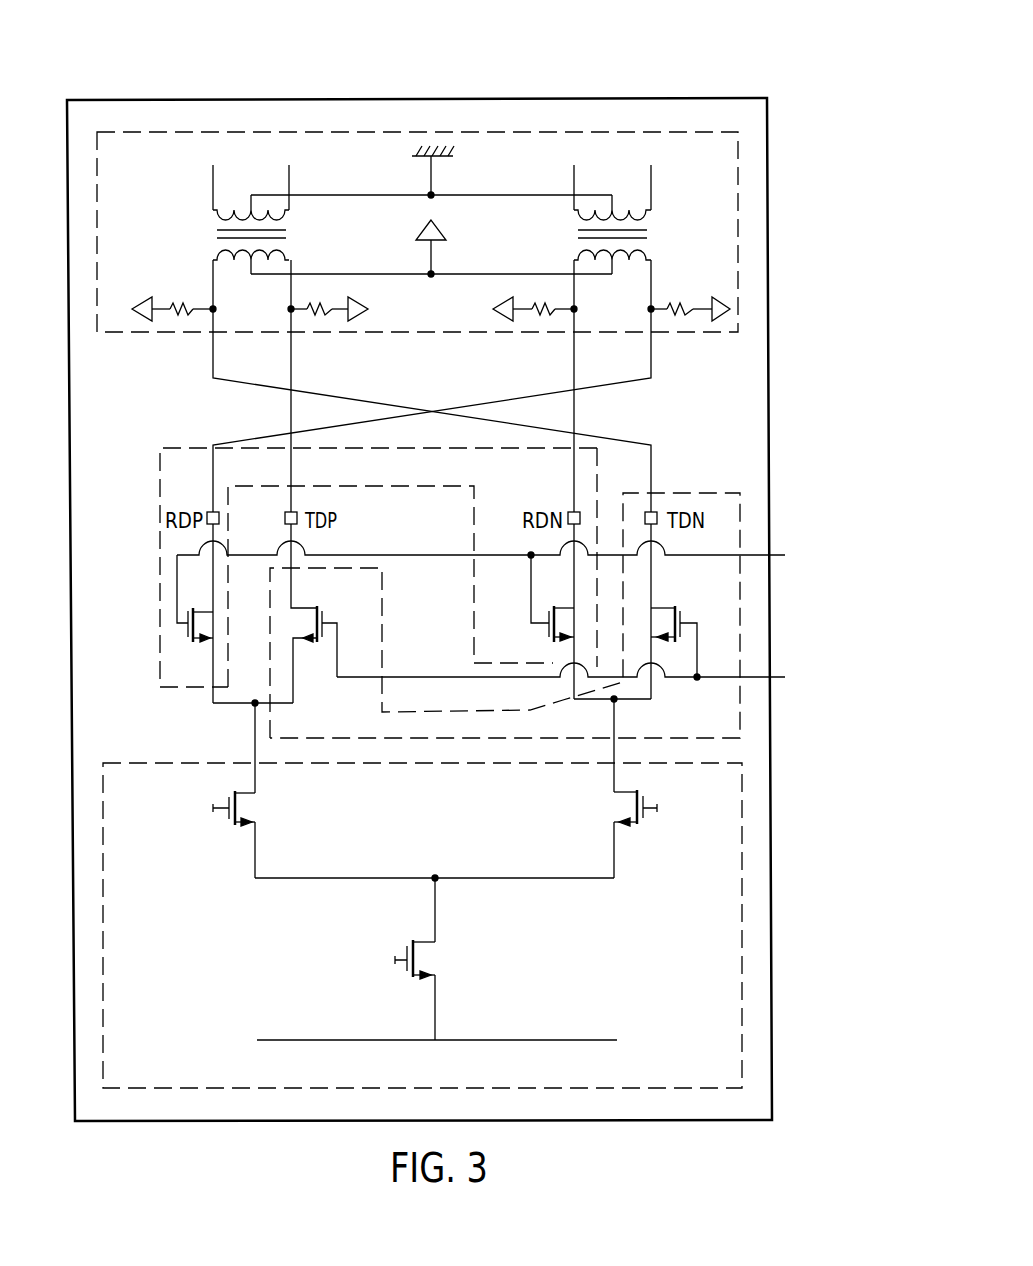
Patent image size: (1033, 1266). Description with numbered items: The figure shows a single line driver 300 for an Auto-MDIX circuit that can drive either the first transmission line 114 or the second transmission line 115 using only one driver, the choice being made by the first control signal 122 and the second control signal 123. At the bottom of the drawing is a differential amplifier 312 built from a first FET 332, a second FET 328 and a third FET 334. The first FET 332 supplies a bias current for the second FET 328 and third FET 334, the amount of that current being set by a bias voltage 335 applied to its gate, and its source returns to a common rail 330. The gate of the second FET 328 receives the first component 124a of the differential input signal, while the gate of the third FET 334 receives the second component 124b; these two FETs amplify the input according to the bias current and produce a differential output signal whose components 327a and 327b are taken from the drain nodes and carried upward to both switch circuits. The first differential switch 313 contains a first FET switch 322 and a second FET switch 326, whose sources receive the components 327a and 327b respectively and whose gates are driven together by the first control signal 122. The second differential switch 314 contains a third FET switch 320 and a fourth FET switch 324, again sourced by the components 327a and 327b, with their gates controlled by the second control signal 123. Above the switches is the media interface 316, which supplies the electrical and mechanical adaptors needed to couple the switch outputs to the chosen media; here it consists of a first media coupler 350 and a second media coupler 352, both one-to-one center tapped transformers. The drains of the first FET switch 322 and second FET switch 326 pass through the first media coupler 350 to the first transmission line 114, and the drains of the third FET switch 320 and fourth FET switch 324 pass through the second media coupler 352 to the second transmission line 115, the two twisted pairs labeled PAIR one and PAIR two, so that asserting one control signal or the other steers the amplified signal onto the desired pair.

The line driver 300 is at (717, 27).
The first transmission line 114 is at (233, 135).
The second transmission line 115 is at (603, 135).
The media interface 316 is at (738, 178).
The first media coupler 350 is at (215, 247).
The second media coupler 352 is at (646, 237).
The second differential switch 314 is at (473, 500).
The first differential switch 313 is at (382, 626).
The third FET switch 320 is at (188, 630).
The first FET switch 322 is at (317, 612).
The fourth FET switch 324 is at (550, 634).
The second FET switch 326 is at (678, 608).
The second control signal 123 is at (502, 554).
The first control signal 122 is at (582, 676).
The differential output signal component 327a is at (255, 771).
The differential output signal component 327b is at (614, 770).
The second FET 328 is at (240, 803).
The third FET 334 is at (633, 805).
The first component of the differential input signal 124a is at (215, 804).
The second component of the differential input signal 124b is at (657, 804).
The first FET 332 is at (420, 955).
The bias voltage 335 is at (395, 960).
The ground rail 330 is at (310, 1040).
The differential amplifier 312 is at (742, 1086).